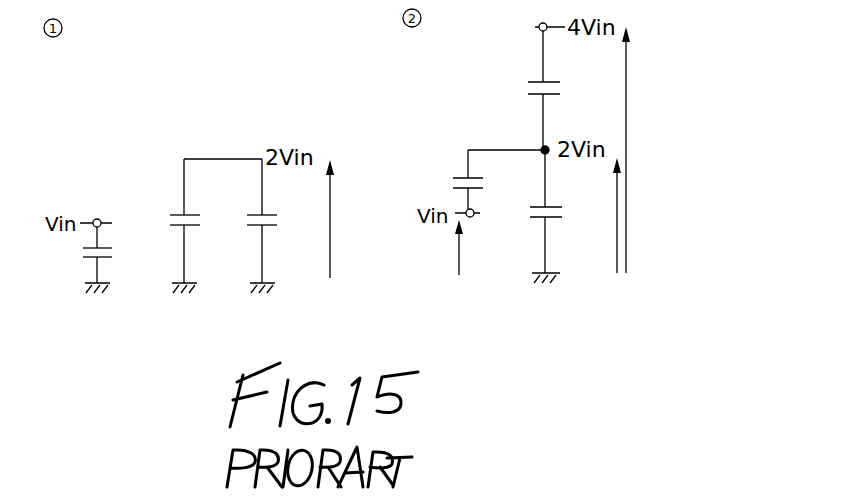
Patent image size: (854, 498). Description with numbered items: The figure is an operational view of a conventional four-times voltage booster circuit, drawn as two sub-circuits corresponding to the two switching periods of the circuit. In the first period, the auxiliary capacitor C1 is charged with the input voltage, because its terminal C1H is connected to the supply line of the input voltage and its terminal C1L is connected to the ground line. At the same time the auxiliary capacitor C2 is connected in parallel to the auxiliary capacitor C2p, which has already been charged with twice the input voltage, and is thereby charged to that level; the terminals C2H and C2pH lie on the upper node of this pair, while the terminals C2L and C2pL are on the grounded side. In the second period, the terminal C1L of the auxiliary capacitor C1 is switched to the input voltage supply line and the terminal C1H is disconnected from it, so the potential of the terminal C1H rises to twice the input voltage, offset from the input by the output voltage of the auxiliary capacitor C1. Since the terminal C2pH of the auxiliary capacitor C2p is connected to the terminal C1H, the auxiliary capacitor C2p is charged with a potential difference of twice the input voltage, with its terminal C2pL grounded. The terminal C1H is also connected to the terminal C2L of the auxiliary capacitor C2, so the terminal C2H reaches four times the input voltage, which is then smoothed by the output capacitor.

The auxiliary capacitor C1 is at (304, 220).
The terminal C1H is at (111, 237).
The terminal C1L is at (110, 270).
The auxiliary capacitor C2 is at (365, 157).
The terminal C2H is at (197, 204).
The terminal C2L is at (196, 238).
The auxiliary capacitor C2p is at (431, 218).
The terminal C2pH is at (278, 204).
The terminal C2pL is at (277, 237).